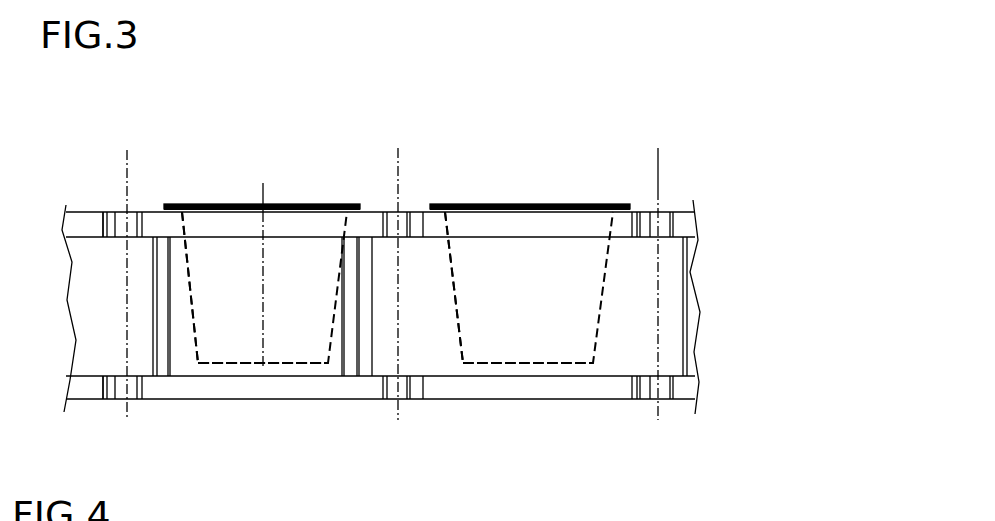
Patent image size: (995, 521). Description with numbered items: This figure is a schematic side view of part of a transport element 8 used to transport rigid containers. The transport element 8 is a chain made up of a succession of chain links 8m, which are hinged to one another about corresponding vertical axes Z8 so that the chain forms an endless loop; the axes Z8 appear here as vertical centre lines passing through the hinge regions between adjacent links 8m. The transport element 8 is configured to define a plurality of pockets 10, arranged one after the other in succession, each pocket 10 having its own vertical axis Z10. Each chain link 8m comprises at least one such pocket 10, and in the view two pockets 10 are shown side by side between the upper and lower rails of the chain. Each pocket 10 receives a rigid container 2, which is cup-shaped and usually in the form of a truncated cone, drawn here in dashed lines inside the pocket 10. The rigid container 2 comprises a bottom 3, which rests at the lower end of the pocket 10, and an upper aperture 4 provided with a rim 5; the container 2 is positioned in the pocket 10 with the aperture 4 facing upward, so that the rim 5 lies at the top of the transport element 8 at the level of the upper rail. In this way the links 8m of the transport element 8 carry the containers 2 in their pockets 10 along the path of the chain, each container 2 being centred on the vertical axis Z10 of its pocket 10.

The rigid container 2 is at (190, 298).
The bottom 3 is at (311, 363).
The upper aperture 4 is at (258, 202).
The rim 5 is at (172, 203).
The transport element 8 is at (430, 418).
The chain link 8m is at (107, 399).
The pocket 10 is at (198, 365).
The vertical axis Z8 is at (398, 167).
The vertical axis Z10 is at (263, 263).